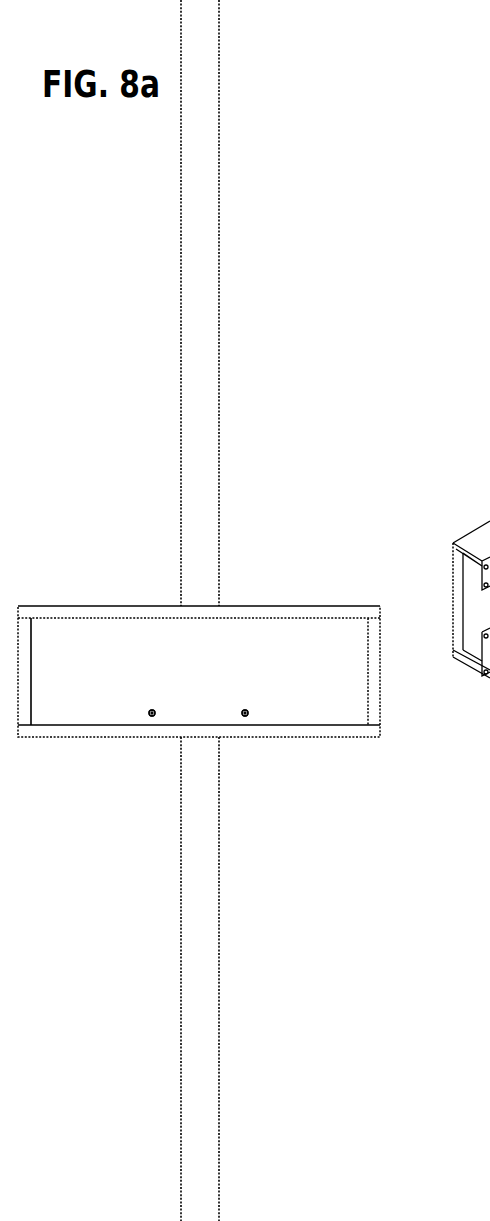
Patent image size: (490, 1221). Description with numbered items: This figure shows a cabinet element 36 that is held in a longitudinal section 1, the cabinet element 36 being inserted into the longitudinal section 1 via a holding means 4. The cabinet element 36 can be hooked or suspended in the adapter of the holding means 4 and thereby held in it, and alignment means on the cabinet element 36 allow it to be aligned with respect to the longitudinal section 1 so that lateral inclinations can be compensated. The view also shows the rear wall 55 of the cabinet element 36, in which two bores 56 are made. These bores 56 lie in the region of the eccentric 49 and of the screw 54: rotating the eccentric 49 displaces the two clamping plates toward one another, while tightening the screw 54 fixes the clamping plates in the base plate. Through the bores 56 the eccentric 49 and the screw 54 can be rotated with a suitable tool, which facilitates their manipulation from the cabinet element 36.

The longitudinal section 1 is at (200, 170).
The cabinet element 36 is at (315, 606).
The rear wall 55 is at (345, 682).
The screw 54 is at (154, 711).
The eccentric 49 is at (247, 711).
The bores 56 is at (152, 716).
The holding means 4 is at (489, 703).